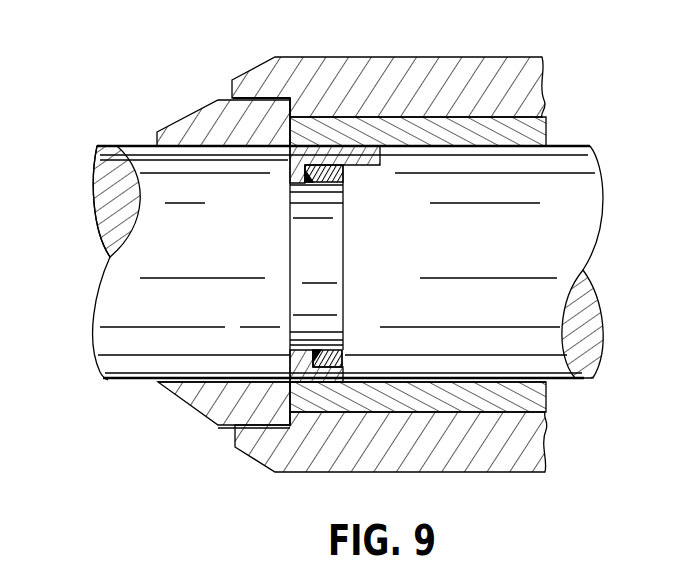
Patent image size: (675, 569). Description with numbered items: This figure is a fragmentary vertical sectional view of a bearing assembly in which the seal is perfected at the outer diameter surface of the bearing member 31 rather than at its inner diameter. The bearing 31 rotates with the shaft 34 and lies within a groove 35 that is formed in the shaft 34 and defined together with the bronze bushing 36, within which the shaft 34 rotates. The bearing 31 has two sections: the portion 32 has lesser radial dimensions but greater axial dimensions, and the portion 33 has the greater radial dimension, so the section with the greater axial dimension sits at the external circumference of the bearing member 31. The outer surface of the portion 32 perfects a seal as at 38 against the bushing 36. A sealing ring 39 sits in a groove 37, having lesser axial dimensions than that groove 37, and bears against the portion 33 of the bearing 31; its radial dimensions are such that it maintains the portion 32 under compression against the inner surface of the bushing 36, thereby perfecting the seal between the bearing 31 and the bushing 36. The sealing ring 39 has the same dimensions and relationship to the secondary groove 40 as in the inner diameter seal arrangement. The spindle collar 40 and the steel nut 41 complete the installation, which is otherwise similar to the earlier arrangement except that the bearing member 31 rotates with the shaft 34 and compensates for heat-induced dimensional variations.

The bearing member 31 is at (300, 133).
The portion of lesser radial dimension 32 is at (346, 146).
The portion of greater radial dimension 33 is at (292, 170).
The shaft 34 is at (437, 265).
The groove 35 is at (338, 298).
The bronze bushing 36 is at (549, 137).
The groove 37 is at (344, 172).
The seal 38 is at (303, 148).
The sealing ring 39 is at (347, 357).
The spindle collar 40 is at (215, 118).
The steel nut 41 is at (448, 56).